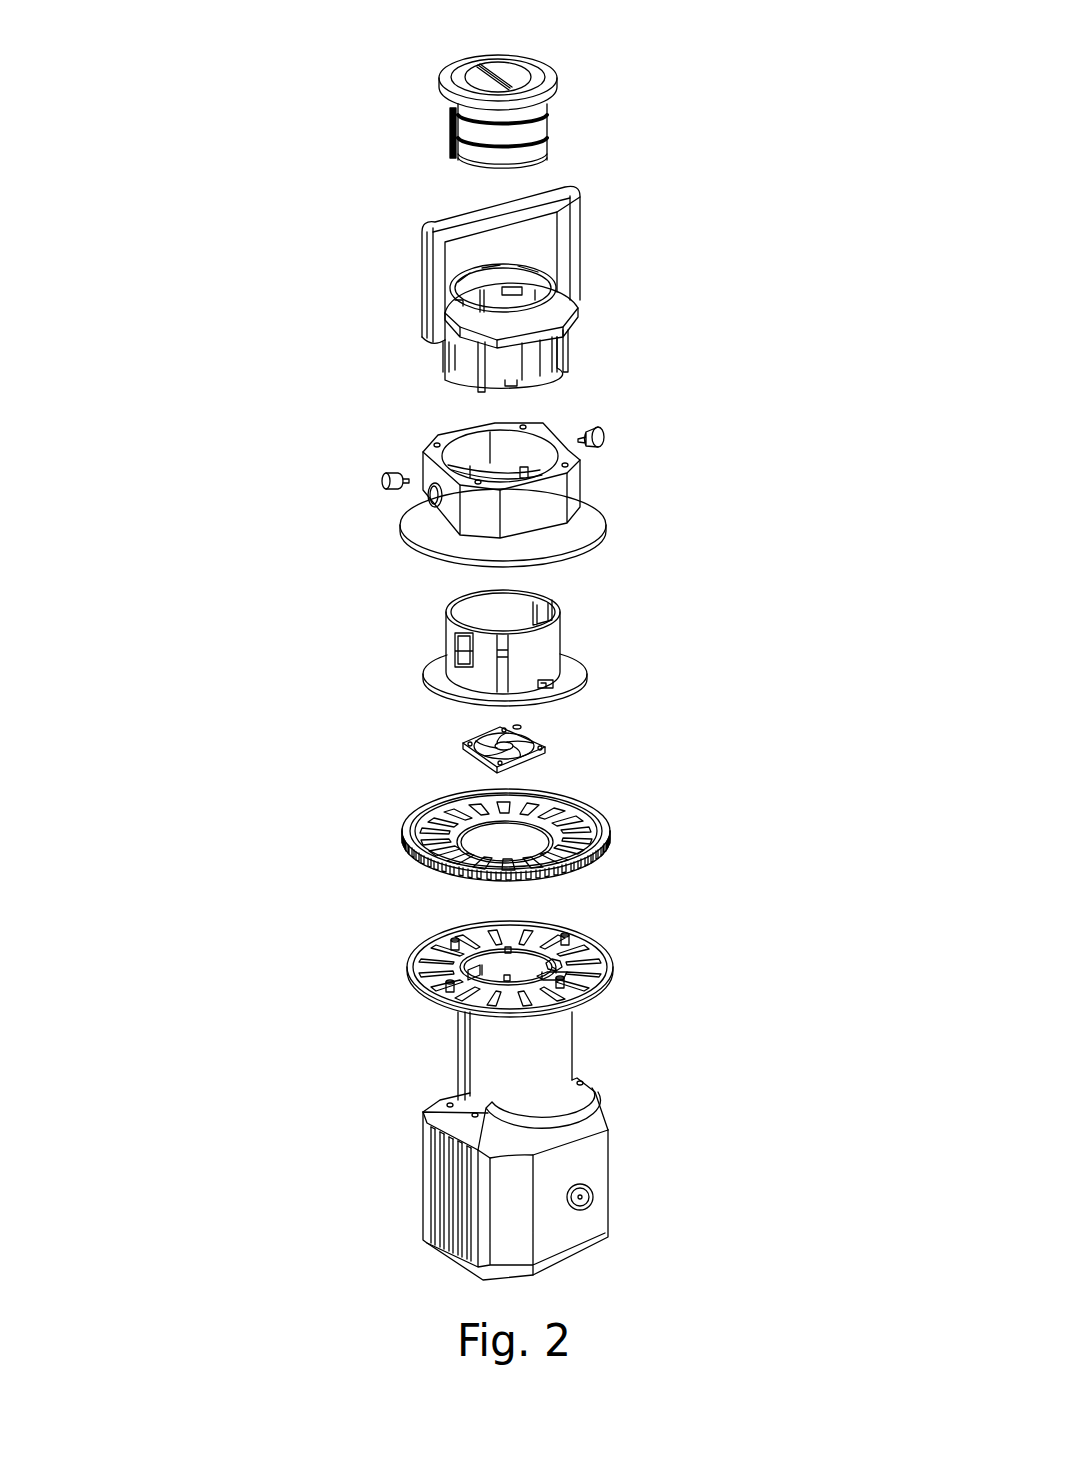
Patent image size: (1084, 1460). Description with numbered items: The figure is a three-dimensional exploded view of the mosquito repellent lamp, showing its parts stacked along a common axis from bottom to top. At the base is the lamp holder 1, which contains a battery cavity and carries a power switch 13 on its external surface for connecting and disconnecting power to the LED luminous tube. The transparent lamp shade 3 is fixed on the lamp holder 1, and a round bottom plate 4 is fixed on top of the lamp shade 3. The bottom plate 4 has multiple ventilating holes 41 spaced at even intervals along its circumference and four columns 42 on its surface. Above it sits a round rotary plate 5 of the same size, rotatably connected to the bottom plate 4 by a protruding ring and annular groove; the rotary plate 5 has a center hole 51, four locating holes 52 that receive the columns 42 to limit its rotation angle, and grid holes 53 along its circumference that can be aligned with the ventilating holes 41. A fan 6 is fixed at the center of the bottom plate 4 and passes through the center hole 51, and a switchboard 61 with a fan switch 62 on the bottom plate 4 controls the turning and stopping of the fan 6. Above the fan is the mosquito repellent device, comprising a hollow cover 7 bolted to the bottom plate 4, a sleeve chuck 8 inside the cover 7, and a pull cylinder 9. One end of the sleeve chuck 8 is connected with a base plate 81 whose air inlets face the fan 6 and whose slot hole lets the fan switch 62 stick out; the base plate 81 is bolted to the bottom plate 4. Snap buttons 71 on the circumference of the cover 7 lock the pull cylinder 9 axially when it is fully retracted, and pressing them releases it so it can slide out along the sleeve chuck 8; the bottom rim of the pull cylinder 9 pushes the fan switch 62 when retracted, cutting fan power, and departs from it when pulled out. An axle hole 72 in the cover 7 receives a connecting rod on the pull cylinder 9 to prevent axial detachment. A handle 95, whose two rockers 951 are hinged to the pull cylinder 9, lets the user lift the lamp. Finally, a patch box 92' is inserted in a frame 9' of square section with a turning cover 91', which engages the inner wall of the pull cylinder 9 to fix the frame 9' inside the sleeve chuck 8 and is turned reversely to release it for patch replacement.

The lamp holder 1 is at (592, 1150).
The power switch 13 is at (594, 1198).
The lamp shade 3 is at (495, 1075).
The bottom plate 4 is at (610, 962).
The ventilating holes 41 is at (430, 972).
The columns 42 is at (455, 938).
The rotary plate 5 is at (405, 833).
The center hole 51 is at (608, 848).
The locating holes 52 is at (477, 812).
The grid holes 53 is at (515, 847).
The fan 6 is at (497, 737).
The switchboard 61 is at (563, 982).
The fan switch 62 is at (558, 960).
The cover 7 is at (585, 518).
The snap buttons 71 is at (605, 432).
The axle hole 72 is at (522, 423).
The sleeve chuck 8 is at (542, 645).
The base plate 81 is at (437, 668).
The pull cylinder 9 is at (470, 284).
The handle 95 is at (450, 229).
The rockers 951 is at (432, 288).
The frame 9' is at (536, 91).
The turning cover 91' is at (556, 54).
The patch box 92' is at (578, 125).